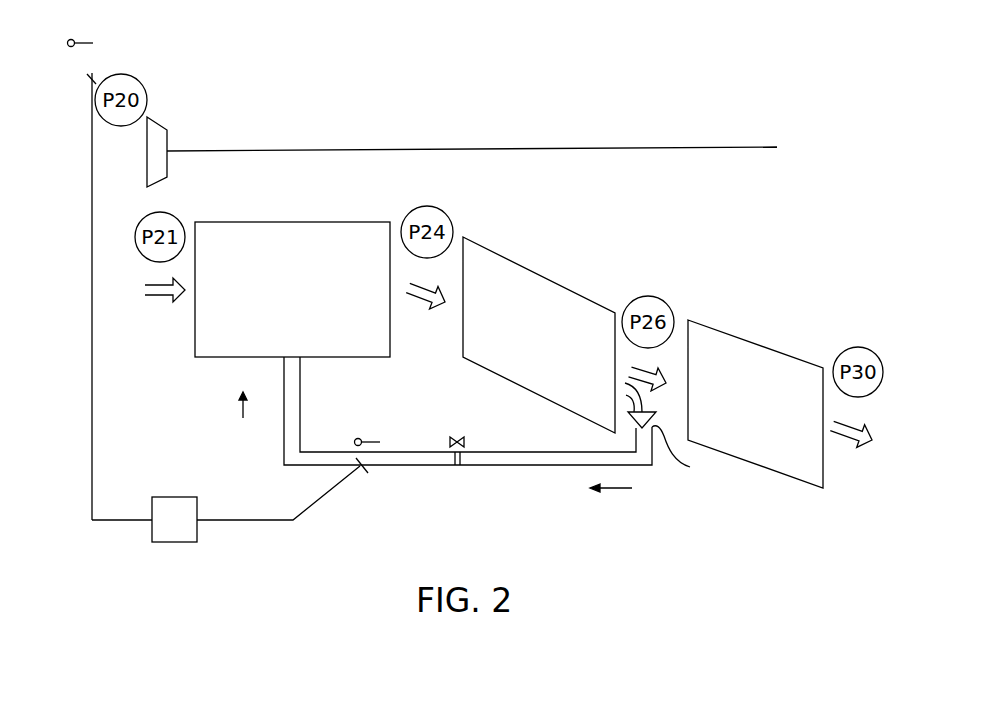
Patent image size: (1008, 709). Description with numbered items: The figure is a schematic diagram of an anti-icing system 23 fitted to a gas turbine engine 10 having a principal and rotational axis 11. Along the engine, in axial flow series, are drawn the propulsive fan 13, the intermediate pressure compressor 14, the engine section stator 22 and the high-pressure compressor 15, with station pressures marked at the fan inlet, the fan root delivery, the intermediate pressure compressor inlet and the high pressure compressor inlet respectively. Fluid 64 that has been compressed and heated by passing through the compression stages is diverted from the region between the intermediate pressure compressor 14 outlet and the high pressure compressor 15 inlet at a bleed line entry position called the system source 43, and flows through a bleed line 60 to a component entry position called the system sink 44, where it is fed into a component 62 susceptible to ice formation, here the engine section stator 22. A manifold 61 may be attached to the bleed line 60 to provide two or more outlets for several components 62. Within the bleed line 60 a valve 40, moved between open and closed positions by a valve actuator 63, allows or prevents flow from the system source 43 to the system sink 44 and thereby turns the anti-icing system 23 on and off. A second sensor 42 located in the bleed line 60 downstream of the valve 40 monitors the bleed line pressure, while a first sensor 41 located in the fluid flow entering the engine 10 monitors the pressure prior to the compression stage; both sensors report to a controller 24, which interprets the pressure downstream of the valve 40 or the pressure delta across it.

The gas turbine engine 10 is at (482, 105).
The principal and rotational axis 11 is at (757, 143).
The propulsive fan 13 is at (157, 133).
The intermediate pressure compressor 14 is at (562, 285).
The high-pressure compressor 15 is at (758, 343).
The engine section stator 22 is at (290, 220).
The anti-icing system 23 is at (371, 492).
The controller 24 is at (173, 543).
The valve 40 is at (463, 457).
The first sensor 41 is at (96, 72).
The second sensor 42 is at (370, 467).
The system source 43 is at (689, 458).
The system sink 44 is at (292, 357).
The bleed line 60 is at (280, 456).
The manifold 61 is at (293, 367).
The component 62 is at (217, 317).
The valve actuator 63 is at (455, 475).
The fluid 64 is at (538, 460).